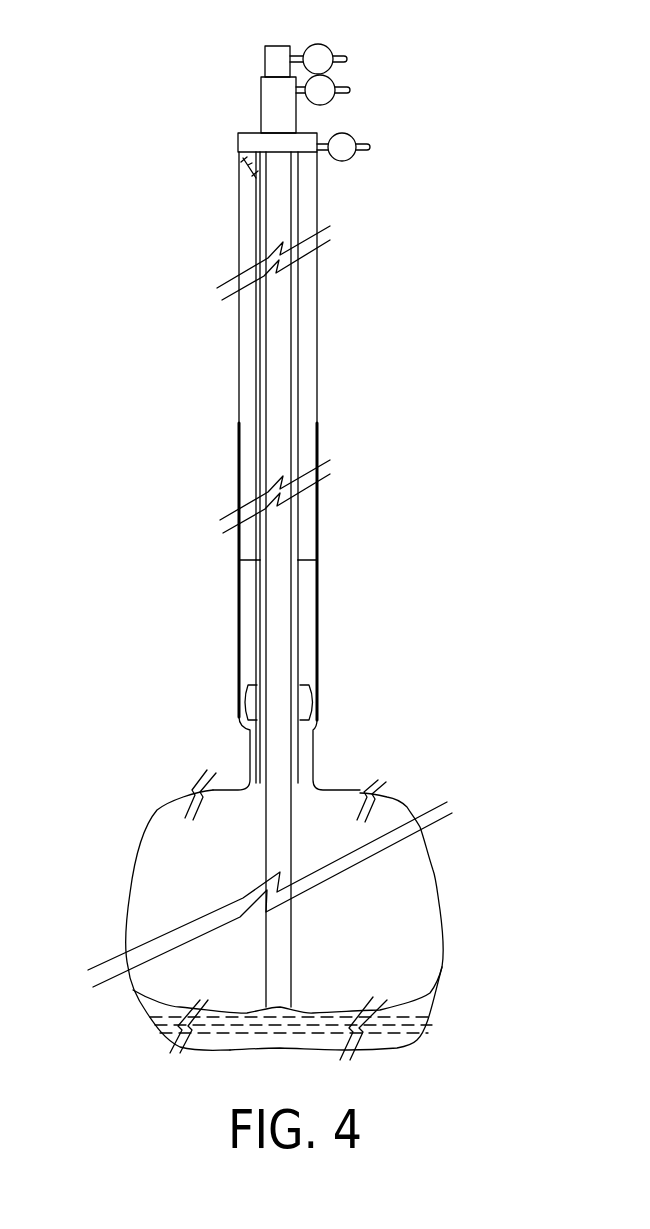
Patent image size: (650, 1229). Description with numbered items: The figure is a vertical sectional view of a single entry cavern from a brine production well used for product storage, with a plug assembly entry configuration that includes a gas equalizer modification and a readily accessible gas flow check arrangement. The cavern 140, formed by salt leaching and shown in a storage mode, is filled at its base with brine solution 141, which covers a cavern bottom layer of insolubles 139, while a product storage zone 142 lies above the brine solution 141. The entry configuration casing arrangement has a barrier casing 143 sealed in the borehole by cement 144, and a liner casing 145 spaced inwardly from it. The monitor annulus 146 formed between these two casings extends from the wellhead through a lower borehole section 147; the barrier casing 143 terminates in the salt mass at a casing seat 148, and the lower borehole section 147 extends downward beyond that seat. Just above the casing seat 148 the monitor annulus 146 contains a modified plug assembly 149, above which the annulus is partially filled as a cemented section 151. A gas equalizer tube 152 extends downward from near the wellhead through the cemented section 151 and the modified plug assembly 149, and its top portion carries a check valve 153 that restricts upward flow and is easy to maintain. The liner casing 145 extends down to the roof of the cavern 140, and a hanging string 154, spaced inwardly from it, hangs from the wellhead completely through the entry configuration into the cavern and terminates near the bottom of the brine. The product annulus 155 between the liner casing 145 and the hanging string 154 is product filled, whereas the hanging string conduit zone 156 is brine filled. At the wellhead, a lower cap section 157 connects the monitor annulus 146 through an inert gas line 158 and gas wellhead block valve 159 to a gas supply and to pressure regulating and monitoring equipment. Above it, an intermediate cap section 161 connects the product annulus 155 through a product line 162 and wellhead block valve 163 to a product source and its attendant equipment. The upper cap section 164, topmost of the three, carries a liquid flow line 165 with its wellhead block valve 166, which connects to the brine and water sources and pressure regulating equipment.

The cavern bottom layer of insolubles 139 is at (393, 1040).
The cavern 140 is at (130, 885).
The brine solution 141 is at (413, 915).
The product storage zone 142 is at (393, 813).
The barrier casing 143 is at (308, 350).
The cement 144 is at (318, 500).
The liner casing 145 is at (300, 415).
The monitor annulus 146 is at (300, 296).
The lower borehole section 147 is at (318, 765).
The casing seat 148 is at (318, 727).
The modified plug assembly 149 is at (320, 683).
The cemented section 151 is at (248, 612).
The gas equalizer tube 152 is at (250, 558).
The check valve 153 is at (247, 177).
The hanging string 154 is at (278, 360).
The product annulus 155 is at (263, 580).
The hanging string conduit zone 156 is at (300, 583).
The lower cap section 157 is at (248, 143).
The inert gas line 158 is at (320, 152).
The gas wellhead block valve 159 is at (353, 153).
The intermediate cap section 161 is at (277, 100).
The product line 162 is at (313, 103).
The wellhead block valve 163 is at (333, 83).
The upper cap section 164 is at (278, 62).
The liquid flow line 165 is at (297, 52).
The wellhead block valve 166 is at (332, 50).